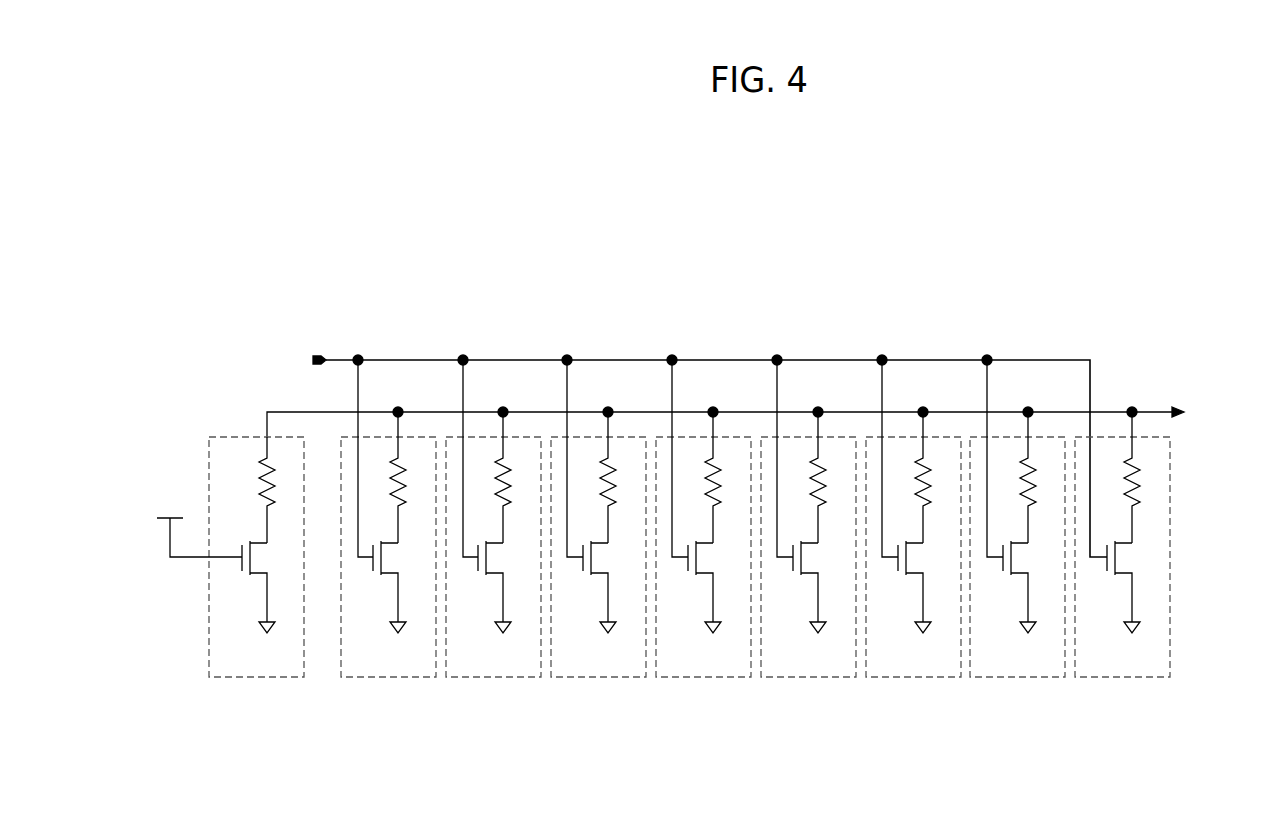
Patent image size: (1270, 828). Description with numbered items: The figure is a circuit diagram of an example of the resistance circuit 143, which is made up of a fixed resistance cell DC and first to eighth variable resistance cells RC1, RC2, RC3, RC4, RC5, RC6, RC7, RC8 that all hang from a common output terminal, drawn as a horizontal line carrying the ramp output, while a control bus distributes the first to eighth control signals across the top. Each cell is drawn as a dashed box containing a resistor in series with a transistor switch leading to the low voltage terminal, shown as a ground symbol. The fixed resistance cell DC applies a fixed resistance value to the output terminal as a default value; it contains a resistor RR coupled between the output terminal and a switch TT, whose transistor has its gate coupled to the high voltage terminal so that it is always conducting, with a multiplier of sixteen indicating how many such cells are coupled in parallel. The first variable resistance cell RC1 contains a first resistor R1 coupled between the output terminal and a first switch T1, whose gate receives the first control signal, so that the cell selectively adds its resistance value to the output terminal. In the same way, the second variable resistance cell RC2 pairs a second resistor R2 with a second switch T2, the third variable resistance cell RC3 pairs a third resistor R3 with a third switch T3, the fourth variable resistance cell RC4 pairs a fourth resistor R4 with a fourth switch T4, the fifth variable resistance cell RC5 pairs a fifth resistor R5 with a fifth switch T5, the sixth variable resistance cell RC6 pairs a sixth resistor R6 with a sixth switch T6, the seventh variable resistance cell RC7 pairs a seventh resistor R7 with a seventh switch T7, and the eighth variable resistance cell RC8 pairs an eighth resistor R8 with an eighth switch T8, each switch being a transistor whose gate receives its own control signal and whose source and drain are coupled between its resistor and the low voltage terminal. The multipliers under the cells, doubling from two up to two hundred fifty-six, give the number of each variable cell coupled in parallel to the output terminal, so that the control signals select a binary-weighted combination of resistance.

The resistance circuit 143 is at (185, 341).
The fixed resistance cell DC is at (245, 667).
The first variable resistance cell RC1 is at (380, 667).
The second variable resistance cell RC2 is at (485, 667).
The third variable resistance cell RC3 is at (590, 667).
The fourth variable resistance cell RC4 is at (695, 667).
The fifth variable resistance cell RC5 is at (800, 667).
The sixth variable resistance cell RC6 is at (905, 667).
The seventh variable resistance cell RC7 is at (1009, 667).
The eighth variable resistance cell RC8 is at (1114, 667).
The resistor RR is at (276, 490).
The switch TT is at (225, 575).
The first resistor R1 is at (407, 477).
The first switch T1 is at (391, 496).
The second resistor R2 is at (512, 477).
The second switch T2 is at (496, 496).
The third resistor R3 is at (617, 477).
The third switch T3 is at (600, 496).
The fourth resistor R4 is at (722, 477).
The fourth switch T4 is at (705, 496).
The fifth resistor R5 is at (827, 477).
The fifth switch T5 is at (810, 496).
The sixth resistor R6 is at (932, 477).
The sixth switch T6 is at (915, 496).
The seventh resistor R7 is at (1037, 477).
The seventh switch T7 is at (1020, 496).
The eighth resistor R8 is at (1141, 477).
The eighth switch T8 is at (1132, 587).